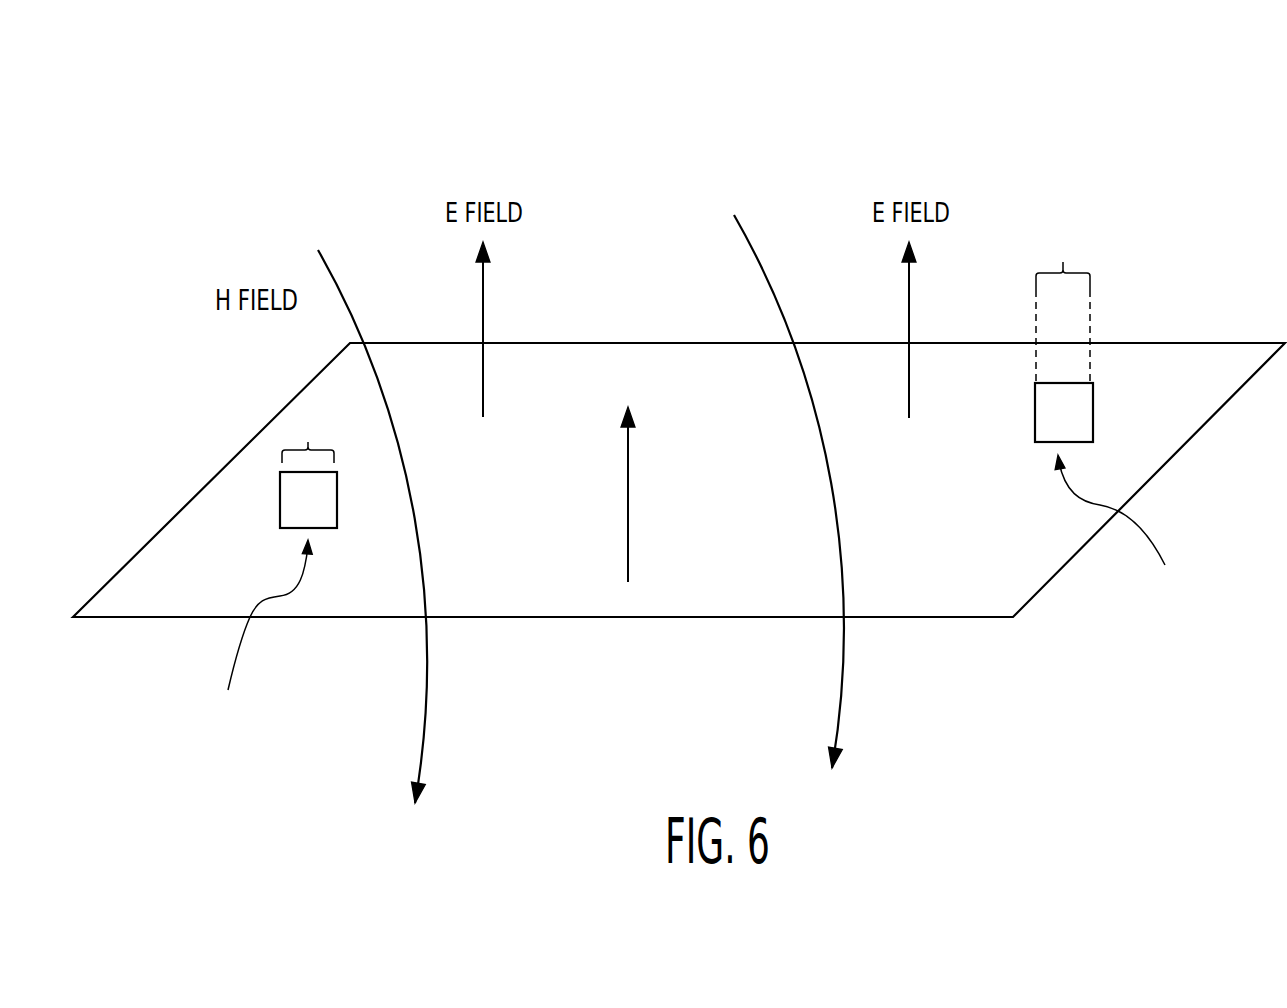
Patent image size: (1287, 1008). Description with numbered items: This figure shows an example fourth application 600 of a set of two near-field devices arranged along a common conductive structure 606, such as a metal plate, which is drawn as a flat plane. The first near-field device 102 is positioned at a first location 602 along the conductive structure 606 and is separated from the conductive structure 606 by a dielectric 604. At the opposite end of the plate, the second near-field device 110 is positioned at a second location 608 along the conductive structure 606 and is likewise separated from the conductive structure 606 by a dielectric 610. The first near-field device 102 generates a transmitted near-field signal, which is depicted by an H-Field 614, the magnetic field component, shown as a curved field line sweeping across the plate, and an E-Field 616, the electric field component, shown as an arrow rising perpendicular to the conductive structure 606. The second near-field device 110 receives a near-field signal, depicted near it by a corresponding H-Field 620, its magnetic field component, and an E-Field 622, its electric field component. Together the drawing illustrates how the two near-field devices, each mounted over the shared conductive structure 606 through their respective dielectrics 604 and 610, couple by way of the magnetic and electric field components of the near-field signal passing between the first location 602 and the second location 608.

The fourth application 600 is at (137, 140).
The conductive structure 606 is at (618, 343).
The first near-field device 102 is at (278, 503).
The first location 602 is at (308, 434).
The dielectric 604 is at (260, 639).
The H-Field 614 is at (411, 502).
The E-Field 616 is at (484, 372).
The H-Field 620 is at (836, 505).
The E-Field 622 is at (910, 392).
The second location 608 is at (1063, 304).
The second near-field device 110 is at (1094, 408).
The dielectric 610 is at (1121, 531).